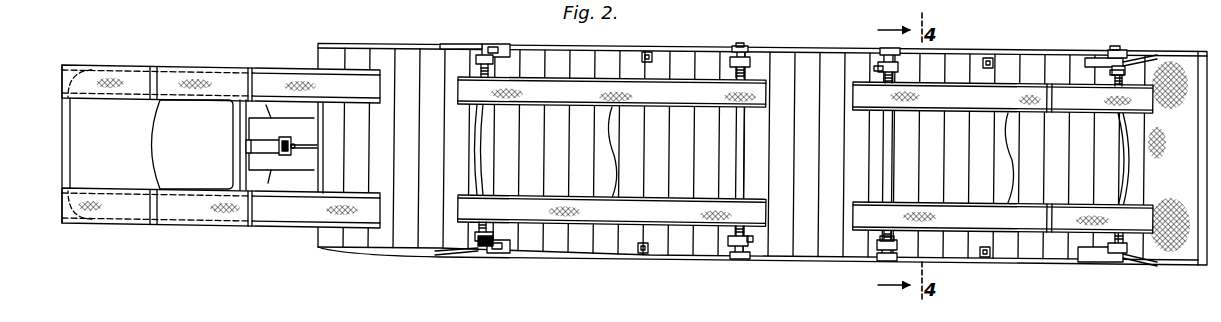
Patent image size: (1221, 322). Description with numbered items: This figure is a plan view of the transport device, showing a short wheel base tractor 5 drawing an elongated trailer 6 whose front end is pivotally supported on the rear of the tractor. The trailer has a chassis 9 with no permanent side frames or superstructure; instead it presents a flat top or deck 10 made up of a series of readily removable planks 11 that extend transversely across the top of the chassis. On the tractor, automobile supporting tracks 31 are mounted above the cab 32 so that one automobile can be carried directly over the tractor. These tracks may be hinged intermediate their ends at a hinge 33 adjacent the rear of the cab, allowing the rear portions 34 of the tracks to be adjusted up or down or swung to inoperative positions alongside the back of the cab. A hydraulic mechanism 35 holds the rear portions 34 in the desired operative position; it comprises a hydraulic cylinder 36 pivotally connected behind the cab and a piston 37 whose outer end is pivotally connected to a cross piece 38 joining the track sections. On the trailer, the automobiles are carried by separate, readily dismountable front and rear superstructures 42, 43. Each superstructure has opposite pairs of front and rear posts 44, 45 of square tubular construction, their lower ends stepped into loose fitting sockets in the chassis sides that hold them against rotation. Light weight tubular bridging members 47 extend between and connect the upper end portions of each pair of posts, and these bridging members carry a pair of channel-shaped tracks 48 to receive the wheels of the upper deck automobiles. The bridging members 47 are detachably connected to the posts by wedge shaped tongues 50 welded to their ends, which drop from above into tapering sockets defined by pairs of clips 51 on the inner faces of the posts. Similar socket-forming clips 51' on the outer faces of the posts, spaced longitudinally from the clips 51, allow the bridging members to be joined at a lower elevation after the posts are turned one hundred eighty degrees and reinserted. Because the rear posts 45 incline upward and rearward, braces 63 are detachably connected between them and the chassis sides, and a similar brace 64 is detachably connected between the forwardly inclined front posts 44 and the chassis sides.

The tractor 5 is at (127, 173).
The trailer 6 is at (1057, 265).
The chassis 9 is at (678, 263).
The deck 10 is at (803, 226).
The planks 11 is at (827, 238).
The automobile supporting tracks 31 is at (208, 66).
The cab 32 is at (204, 150).
The hinge 33 is at (245, 228).
The rear portions of the tracks 34 is at (307, 214).
The hydraulic mechanism 35 is at (297, 137).
The hydraulic cylinder 36 is at (270, 150).
The piston 37 is at (302, 150).
The cross piece 38 is at (318, 162).
The front superstructure 42 is at (556, 236).
The rear superstructure 43 is at (1008, 239).
The front posts 44 is at (498, 47).
The rear posts 45 is at (752, 48).
The bridging members 47 is at (485, 149).
The channel-shaped tracks 48 is at (808, 157).
The wedge shaped tongues 50 is at (477, 238).
The clips 51 is at (815, 154).
The socket-forming clips 51' is at (929, 155).
The braces 63 is at (1134, 57).
The brace 64 is at (470, 44).